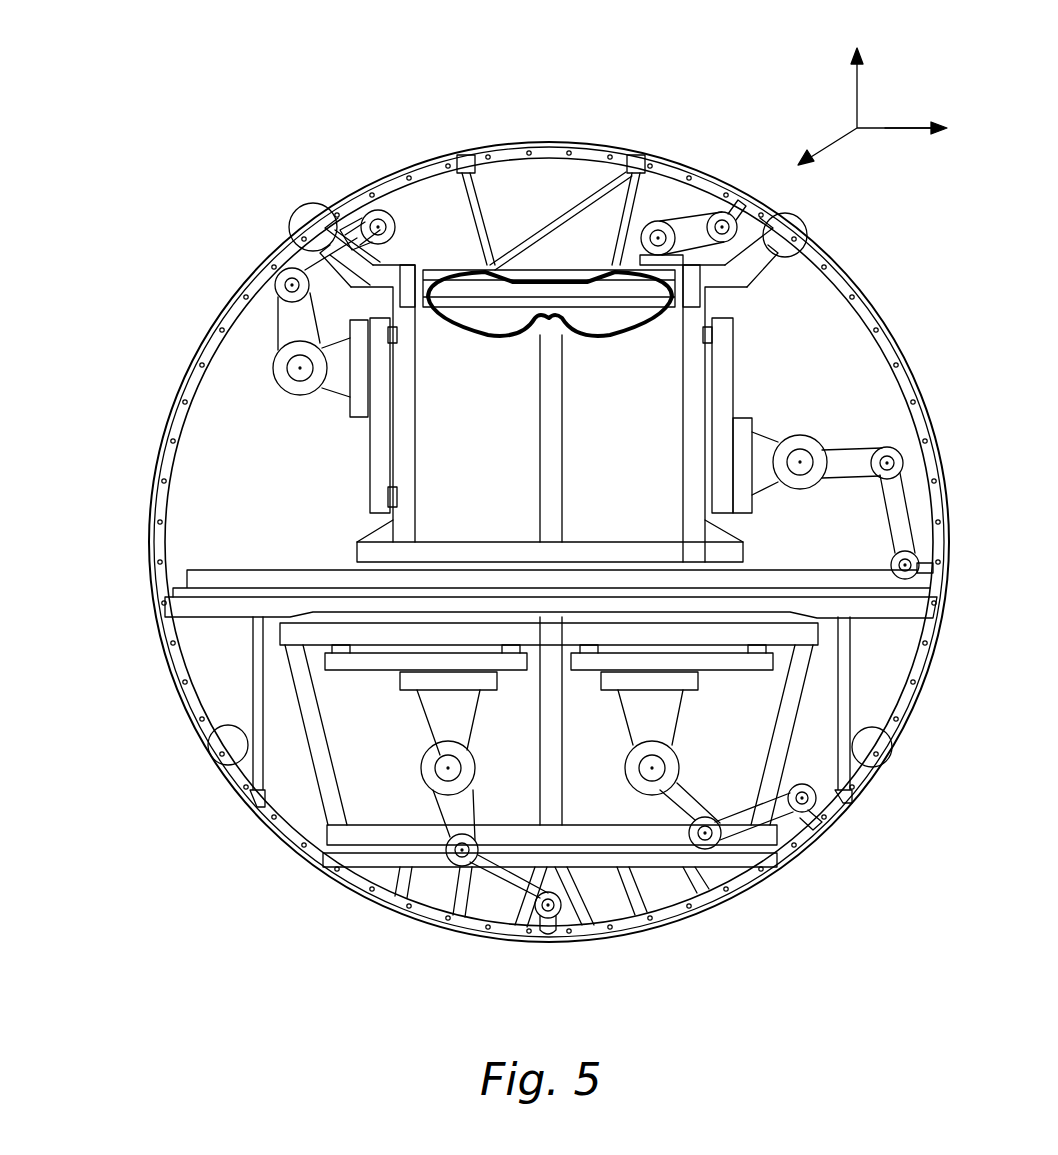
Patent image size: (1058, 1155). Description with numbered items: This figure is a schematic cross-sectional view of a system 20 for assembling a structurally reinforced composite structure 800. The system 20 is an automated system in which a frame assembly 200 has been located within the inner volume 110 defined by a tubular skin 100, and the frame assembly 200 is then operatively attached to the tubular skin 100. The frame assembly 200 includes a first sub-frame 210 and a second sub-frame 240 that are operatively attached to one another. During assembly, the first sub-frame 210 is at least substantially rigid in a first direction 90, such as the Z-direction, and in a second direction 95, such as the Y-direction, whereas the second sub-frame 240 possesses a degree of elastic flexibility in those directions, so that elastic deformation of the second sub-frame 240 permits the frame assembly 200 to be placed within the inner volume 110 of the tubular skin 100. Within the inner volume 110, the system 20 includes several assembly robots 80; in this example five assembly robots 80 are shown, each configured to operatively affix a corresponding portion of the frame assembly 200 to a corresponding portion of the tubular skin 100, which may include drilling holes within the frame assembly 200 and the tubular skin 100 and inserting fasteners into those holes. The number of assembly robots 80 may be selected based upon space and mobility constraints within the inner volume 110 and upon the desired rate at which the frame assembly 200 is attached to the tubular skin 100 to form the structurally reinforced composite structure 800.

The system 20 is at (163, 133).
The tubular skin 100 is at (260, 262).
The inner volume 110 is at (240, 390).
The second sub-frame 240 is at (236, 433).
The structurally reinforced composite structure 800 is at (106, 505).
The frame assembly 200 is at (158, 570).
The first sub-frame 210 is at (228, 675).
The assembly robot 80 is at (684, 215).
The first direction 90 is at (855, 78).
The second direction 95 is at (890, 130).